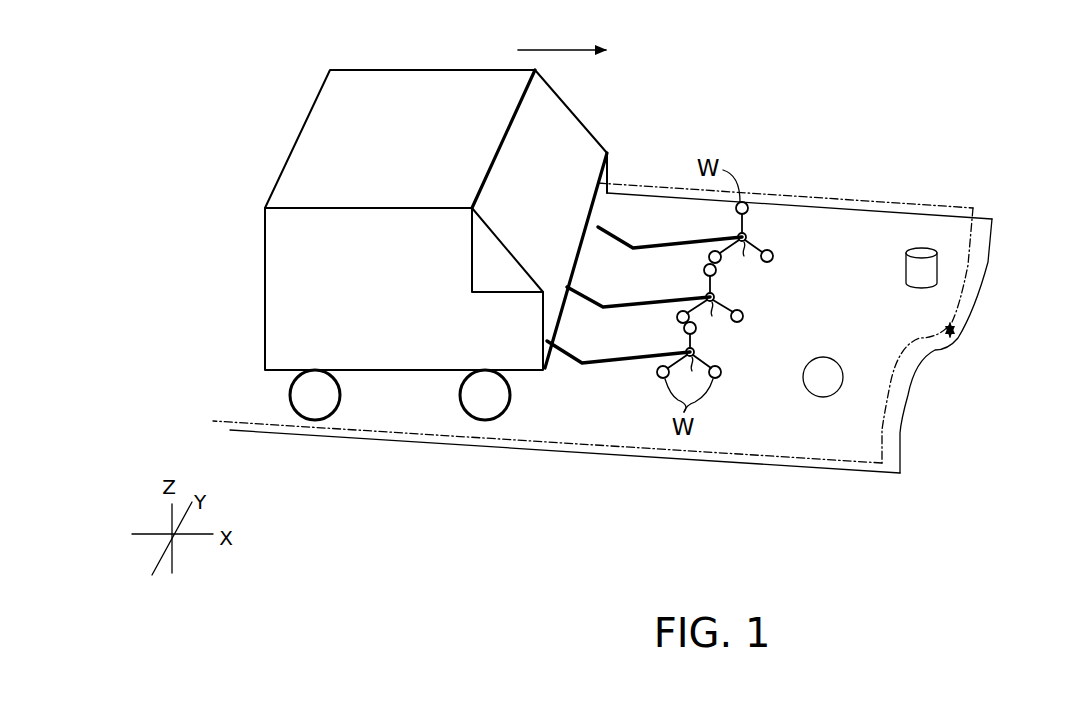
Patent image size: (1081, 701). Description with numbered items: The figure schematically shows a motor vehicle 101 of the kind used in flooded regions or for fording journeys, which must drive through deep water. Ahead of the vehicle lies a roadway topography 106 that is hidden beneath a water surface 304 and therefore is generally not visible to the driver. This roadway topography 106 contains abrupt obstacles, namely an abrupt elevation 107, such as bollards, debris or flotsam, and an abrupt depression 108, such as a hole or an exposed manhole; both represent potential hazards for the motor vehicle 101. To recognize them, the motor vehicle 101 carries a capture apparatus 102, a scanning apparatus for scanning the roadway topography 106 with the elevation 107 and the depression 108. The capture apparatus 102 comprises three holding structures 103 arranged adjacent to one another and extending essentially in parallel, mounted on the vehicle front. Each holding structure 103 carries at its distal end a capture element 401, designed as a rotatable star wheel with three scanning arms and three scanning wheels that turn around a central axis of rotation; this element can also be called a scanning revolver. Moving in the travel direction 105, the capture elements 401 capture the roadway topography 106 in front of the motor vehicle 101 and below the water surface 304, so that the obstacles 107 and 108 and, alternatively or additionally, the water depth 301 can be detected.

The motor vehicle 101 is at (317, 93).
The capture apparatus 102 is at (776, 146).
The holding structures 103 is at (640, 250).
The travel direction 105 is at (562, 37).
The roadway topography 106 is at (903, 433).
The abrupt elevation 107 is at (933, 272).
The abrupt depression 108 is at (817, 375).
The water depth 301 is at (958, 340).
The water surface 304 is at (883, 202).
The capture element 401 is at (759, 226).